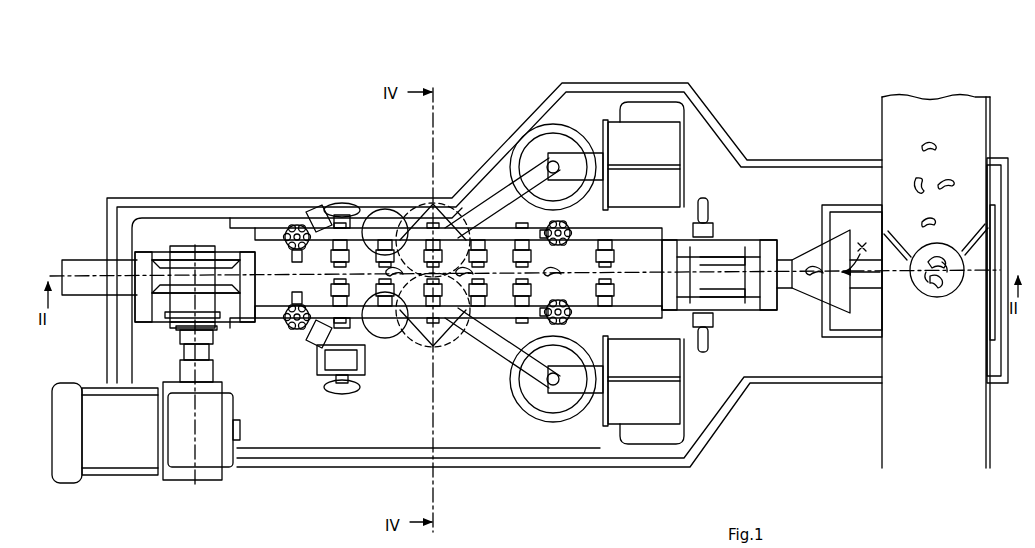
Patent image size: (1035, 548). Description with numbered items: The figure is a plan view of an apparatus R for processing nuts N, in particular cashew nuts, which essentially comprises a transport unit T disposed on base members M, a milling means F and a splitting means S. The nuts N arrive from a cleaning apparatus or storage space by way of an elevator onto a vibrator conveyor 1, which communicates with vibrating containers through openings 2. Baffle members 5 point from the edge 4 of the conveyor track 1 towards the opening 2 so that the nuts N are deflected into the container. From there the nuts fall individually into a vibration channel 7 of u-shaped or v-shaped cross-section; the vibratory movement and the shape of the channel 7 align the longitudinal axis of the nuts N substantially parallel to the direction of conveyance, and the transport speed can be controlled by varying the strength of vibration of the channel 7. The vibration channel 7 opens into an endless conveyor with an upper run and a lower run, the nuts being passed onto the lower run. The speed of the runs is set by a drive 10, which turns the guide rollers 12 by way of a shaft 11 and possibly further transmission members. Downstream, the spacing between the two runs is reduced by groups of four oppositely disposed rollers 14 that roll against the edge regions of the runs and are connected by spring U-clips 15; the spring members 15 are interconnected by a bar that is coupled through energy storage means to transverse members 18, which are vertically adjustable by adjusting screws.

The vibrator conveyor 1 is at (970, 110).
The opening 2 is at (968, 263).
The edge of the conveyor track 4 is at (992, 130).
The baffle member 5 is at (972, 252).
The vibration channel 7 is at (792, 256).
The drive 10 is at (100, 462).
The shaft 11 is at (212, 350).
The guide roller 12 is at (203, 270).
The roller 14 is at (548, 304).
The spring U-clip 15 is at (548, 241).
The transverse member 18 is at (416, 206).
The transport unit T is at (80, 257).
The base member M is at (240, 196).
The splitting means S is at (378, 210).
The milling means F is at (497, 190).
The nut N is at (936, 150).
The apparatus for processing nuts R is at (504, 66).